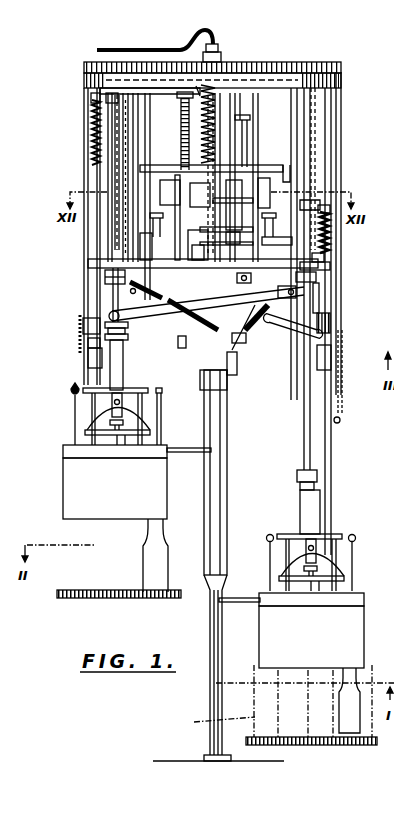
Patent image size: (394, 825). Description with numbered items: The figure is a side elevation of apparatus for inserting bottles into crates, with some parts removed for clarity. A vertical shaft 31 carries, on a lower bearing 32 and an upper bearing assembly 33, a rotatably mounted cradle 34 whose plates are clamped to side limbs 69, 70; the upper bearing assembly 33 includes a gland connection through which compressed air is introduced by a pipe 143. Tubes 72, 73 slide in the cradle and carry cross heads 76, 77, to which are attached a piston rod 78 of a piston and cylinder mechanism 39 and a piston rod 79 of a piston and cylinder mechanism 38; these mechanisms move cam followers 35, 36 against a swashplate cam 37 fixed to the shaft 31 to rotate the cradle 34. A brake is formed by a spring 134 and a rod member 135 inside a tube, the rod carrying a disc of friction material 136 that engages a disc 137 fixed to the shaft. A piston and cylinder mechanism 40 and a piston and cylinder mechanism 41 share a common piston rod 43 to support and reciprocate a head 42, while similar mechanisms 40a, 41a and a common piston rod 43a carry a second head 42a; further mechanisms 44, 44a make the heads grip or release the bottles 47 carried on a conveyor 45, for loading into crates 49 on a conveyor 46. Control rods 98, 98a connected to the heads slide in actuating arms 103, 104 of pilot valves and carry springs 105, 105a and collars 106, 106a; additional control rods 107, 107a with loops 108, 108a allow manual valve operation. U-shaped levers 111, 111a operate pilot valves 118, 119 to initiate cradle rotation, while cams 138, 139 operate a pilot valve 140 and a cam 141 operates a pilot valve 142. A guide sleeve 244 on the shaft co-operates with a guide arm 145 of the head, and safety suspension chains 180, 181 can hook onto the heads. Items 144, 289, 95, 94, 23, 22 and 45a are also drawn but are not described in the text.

The upper bearing assembly 33 is at (246, 74).
The pipe 143 is at (123, 47).
The knob 144 is at (218, 80).
The link 289 is at (200, 86).
The disc of friction material 136 is at (245, 117).
The cradle 34 is at (88, 166).
The control rod 98a is at (92, 183).
The collar 106a is at (88, 98).
The spring 105a is at (88, 120).
The piston and cylinder mechanism 40a is at (112, 224).
The side limb 69 is at (136, 110).
The rod 95 is at (143, 238).
The spring 134 is at (181, 118).
The tube 73 is at (180, 140).
The cam follower 35 is at (190, 180).
The disc 137 is at (239, 133).
The tube 72 is at (248, 126).
The swashplate cam 37 is at (224, 170).
The cross head 76 is at (256, 166).
The cam follower 36 is at (245, 171).
The rod member 135 is at (262, 100).
The piston and cylinder mechanism 40 is at (314, 134).
The side limb 70 is at (295, 151).
The common piston rod 43 is at (306, 414).
The control rod 98 is at (332, 437).
The arm 94 is at (320, 202).
The piston rod 78 is at (250, 242).
The cross head 77 is at (178, 203).
The piston rod 79 is at (178, 229).
The pin 23 is at (200, 246).
The pin 22 is at (234, 213).
The actuating arm 104 is at (88, 257).
The pilot valve 118 is at (113, 287).
The common piston rod 43a is at (112, 302).
The safety suspension chain 181 is at (82, 323).
The additional control rod 107a is at (88, 346).
The loop 108a is at (90, 361).
The U-shaped lever 111a is at (142, 312).
The piston and cylinder mechanism 38 is at (180, 322).
The cam 138 is at (182, 347).
The pilot valve 119 is at (320, 281).
The piston and cylinder mechanism 39 is at (271, 326).
The lower bearing 32 is at (240, 341).
The cam 139 is at (237, 353).
The pilot valve 142 is at (232, 373).
The cam 141 is at (233, 388).
The pilot valve 140 is at (163, 396).
The collar 106 is at (329, 218).
The spring 105 is at (330, 240).
The actuating arm 103 is at (324, 259).
The additional control rod 107 is at (318, 299).
The U-shaped lever 111 is at (331, 326).
The loop 108 is at (332, 352).
The safety suspension chain 180 is at (344, 416).
The piston and cylinder mechanism 41a is at (71, 388).
The piston and cylinder mechanism 44a is at (83, 440).
The second head 42a is at (77, 487).
The arm 45a is at (182, 453).
The bottle 47 is at (148, 578).
The conveyor 45 is at (80, 597).
The guide sleeve 244 is at (229, 442).
The vertical shaft 31 is at (223, 623).
The guide arm 145 is at (244, 598).
The crate 49 is at (215, 722).
The piston and cylinder mechanism 41 is at (313, 512).
The piston and cylinder mechanism 44 is at (313, 585).
The head 42 is at (364, 637).
The conveyor 46 is at (326, 746).